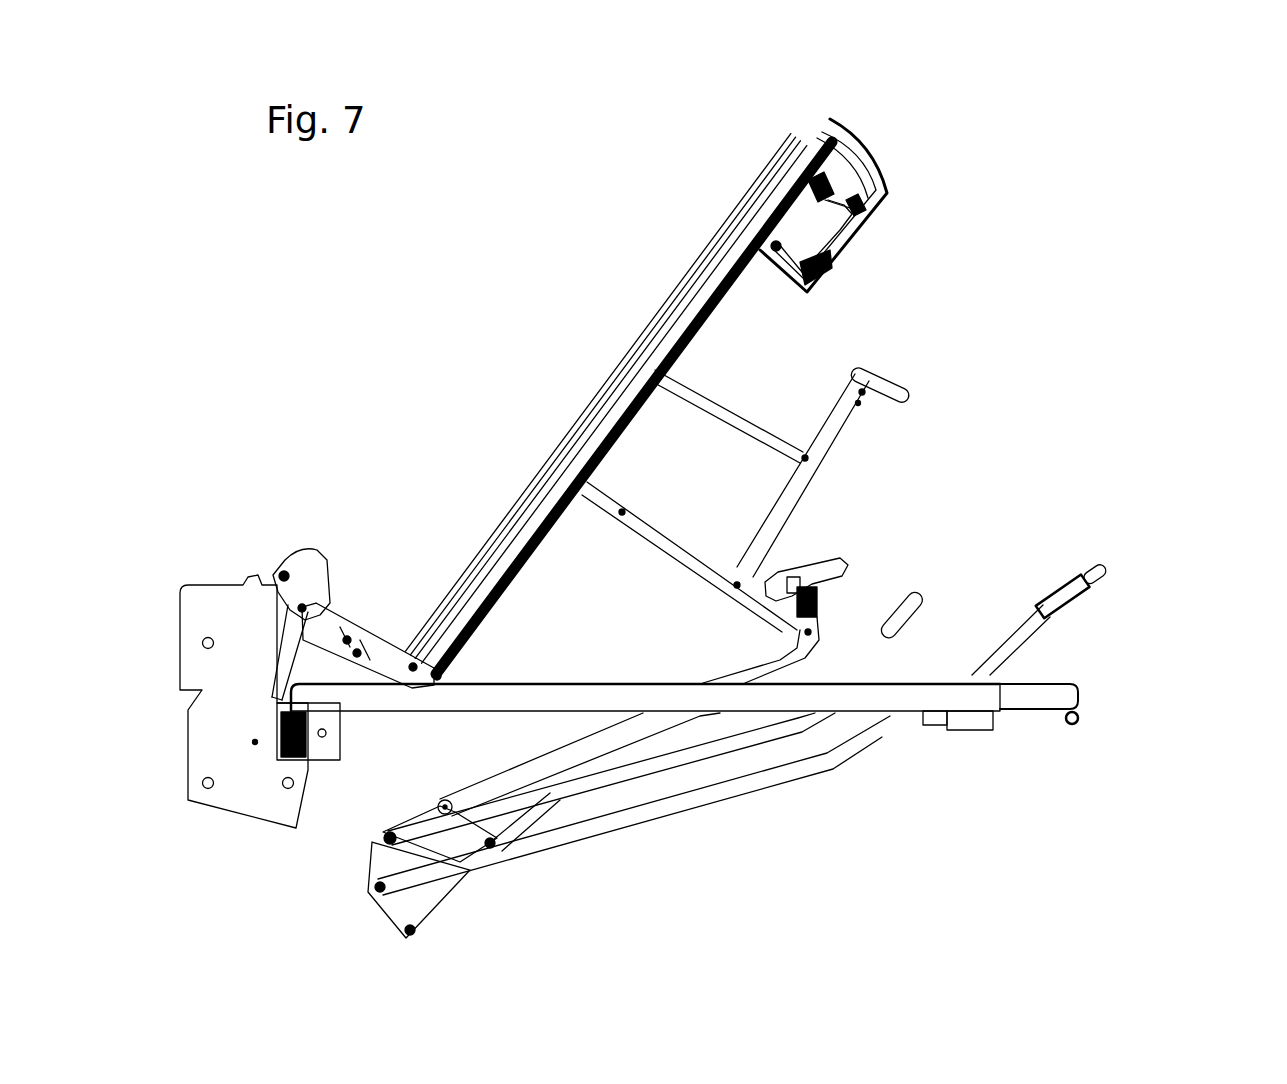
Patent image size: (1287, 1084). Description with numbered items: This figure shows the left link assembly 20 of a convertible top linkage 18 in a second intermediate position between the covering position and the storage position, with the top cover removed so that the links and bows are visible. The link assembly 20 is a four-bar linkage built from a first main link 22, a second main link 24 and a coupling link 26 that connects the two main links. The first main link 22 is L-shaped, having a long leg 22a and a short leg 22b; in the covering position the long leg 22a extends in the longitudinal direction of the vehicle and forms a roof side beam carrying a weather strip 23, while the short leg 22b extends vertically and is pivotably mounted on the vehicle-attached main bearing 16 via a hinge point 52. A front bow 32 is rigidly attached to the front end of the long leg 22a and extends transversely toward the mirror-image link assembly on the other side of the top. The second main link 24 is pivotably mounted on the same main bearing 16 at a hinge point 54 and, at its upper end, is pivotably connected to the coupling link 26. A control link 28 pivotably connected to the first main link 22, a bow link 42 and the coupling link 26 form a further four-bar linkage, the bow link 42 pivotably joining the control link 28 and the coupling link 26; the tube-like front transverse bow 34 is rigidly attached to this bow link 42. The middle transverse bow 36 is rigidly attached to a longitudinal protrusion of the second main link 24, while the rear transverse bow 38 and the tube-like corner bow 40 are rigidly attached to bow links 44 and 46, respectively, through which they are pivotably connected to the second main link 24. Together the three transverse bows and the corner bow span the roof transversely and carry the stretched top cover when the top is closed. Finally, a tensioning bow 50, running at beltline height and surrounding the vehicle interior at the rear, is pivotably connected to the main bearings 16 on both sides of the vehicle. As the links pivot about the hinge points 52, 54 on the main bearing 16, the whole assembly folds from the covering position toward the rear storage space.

The main bearing 16 is at (268, 790).
The top linkage 18 is at (705, 501).
The link assembly 20 is at (653, 323).
The first main link 22 is at (507, 520).
The long leg 22a is at (528, 500).
The short leg 22b is at (377, 657).
The weather strip 23 is at (717, 240).
The second main link 24 is at (823, 680).
The coupling link 26 is at (653, 530).
The control link 28 is at (693, 390).
The front bow 32 is at (833, 197).
The front transverse bow 34 is at (867, 377).
The middle transverse bow 36 is at (823, 567).
The rear transverse bow 38 is at (850, 681).
The corner bow 40 is at (1110, 575).
The bow link 42 is at (833, 438).
The bow link 44 is at (946, 673).
The bow link 46 is at (990, 652).
The tensioning bow 50 is at (887, 690).
The hinge point 52 is at (277, 573).
The hinge point 54 is at (305, 768).